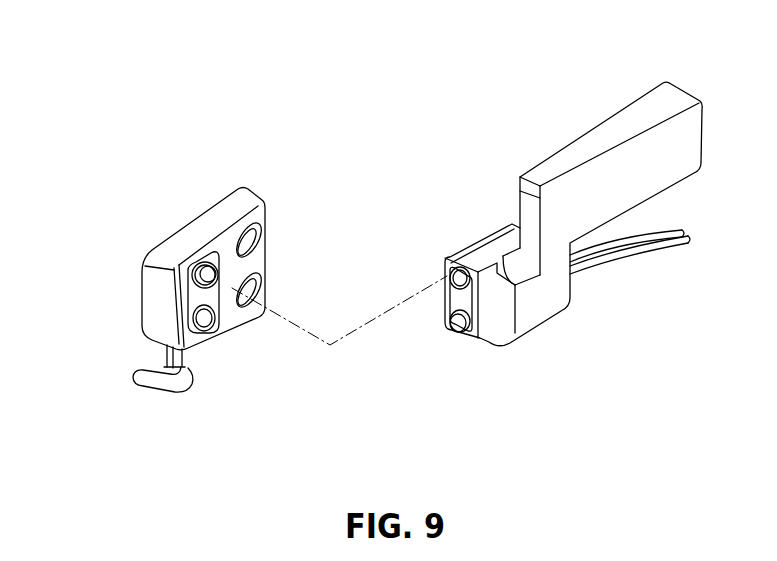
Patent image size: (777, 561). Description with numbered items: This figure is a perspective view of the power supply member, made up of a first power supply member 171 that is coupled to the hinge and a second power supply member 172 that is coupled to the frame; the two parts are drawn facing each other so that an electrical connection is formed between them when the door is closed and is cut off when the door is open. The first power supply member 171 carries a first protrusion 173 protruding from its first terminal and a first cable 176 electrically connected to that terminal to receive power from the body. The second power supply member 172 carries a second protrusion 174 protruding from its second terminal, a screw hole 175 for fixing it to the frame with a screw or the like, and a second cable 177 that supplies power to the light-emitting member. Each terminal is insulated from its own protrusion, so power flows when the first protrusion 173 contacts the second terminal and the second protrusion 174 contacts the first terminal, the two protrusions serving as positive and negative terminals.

The first power supply member 171 is at (563, 120).
The second power supply member 172 is at (147, 194).
The first protrusion 173 is at (455, 325).
The second protrusion 174 is at (214, 268).
The screw hole 175 is at (262, 234).
The first cable 176 is at (604, 258).
The second cable 177 is at (155, 395).